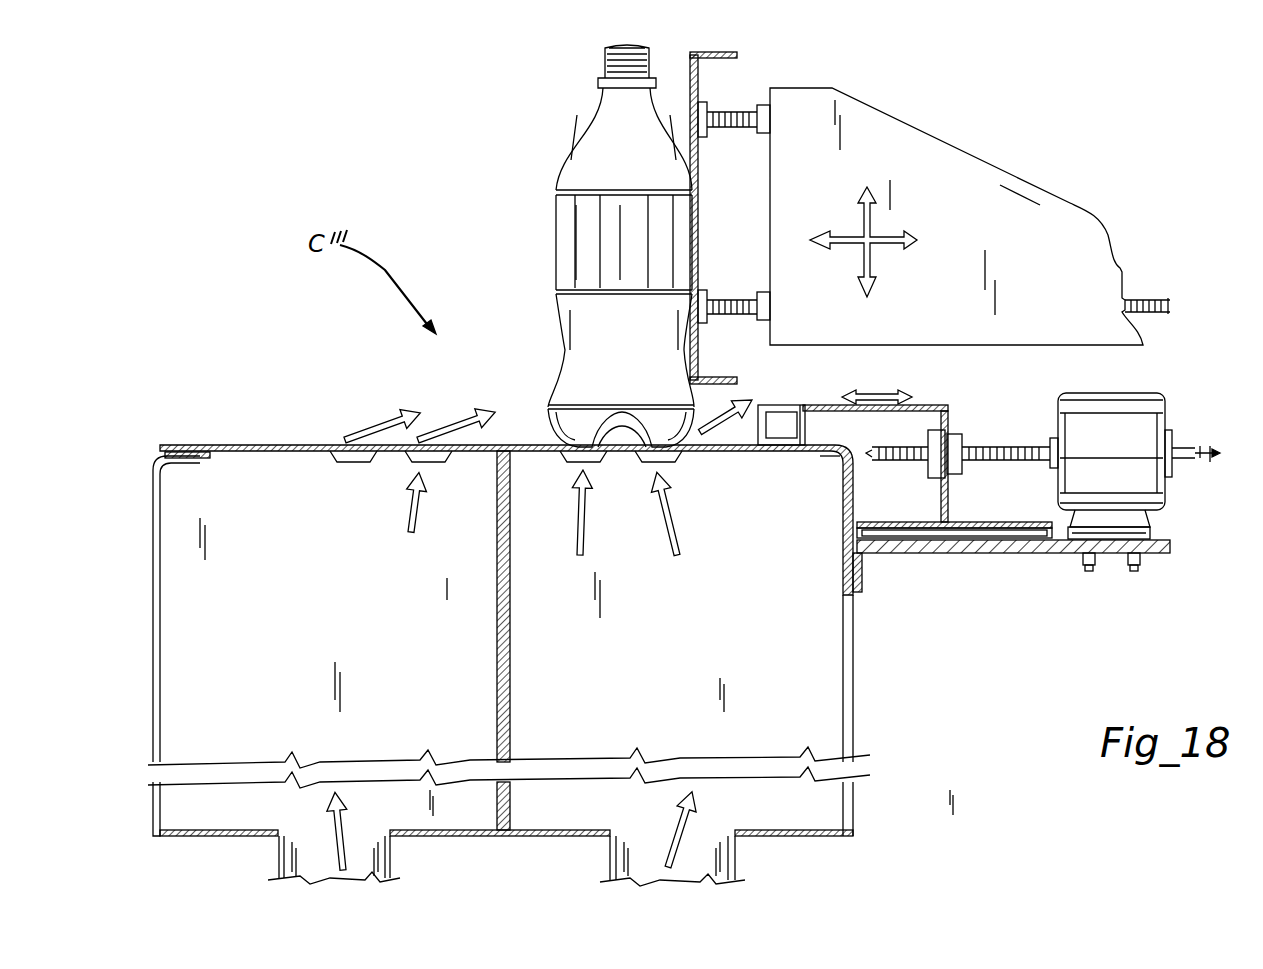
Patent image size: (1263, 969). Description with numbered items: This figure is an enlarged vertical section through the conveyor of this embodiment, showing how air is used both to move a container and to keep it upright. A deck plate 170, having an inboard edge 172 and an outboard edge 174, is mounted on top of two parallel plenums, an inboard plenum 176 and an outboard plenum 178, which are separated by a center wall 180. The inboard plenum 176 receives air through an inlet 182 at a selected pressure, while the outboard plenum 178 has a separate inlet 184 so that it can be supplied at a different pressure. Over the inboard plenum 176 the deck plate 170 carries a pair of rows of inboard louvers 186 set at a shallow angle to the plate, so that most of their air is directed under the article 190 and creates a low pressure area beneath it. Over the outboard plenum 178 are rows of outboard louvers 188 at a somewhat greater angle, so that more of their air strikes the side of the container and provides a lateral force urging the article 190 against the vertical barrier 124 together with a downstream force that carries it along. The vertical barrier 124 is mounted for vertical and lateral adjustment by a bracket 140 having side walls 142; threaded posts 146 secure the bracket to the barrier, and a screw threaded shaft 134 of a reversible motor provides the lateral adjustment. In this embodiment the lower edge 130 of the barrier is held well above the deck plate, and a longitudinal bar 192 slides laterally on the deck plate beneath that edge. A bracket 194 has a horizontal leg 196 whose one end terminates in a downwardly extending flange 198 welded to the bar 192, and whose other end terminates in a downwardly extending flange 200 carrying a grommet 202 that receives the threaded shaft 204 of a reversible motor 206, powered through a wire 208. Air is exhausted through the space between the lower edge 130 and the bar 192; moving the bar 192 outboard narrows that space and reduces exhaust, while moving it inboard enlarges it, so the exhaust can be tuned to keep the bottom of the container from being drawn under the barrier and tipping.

The vertical barrier 124 is at (700, 204).
The lower edge 130 is at (728, 378).
The screw threaded shaft 134 is at (1135, 300).
The bracket 140 is at (947, 136).
The side walls 142 is at (1016, 197).
The threaded posts 146 is at (740, 112).
The deck plate 170 is at (322, 445).
The inboard edge 172 is at (822, 448).
The outboard edge 174 is at (165, 445).
The inboard plenum 176 is at (827, 638).
The outboard plenum 178 is at (232, 452).
The center wall 180 is at (497, 622).
The inlet 182 is at (735, 856).
The inlet 184 is at (390, 858).
The inboard louvers 186 is at (572, 467).
The outboard louvers 188 is at (420, 460).
The article 190 is at (562, 166).
The longitudinal bar 192 is at (793, 405).
The bracket 194 is at (932, 398).
The horizontal leg 196 is at (926, 405).
The downwardly extending flange 198 is at (835, 457).
The downwardly extending flange 200 is at (940, 490).
The grommet 202 is at (958, 435).
The threaded shaft 204 is at (1033, 462).
The reversible motor 206 is at (1136, 395).
The wire 208 is at (1188, 450).